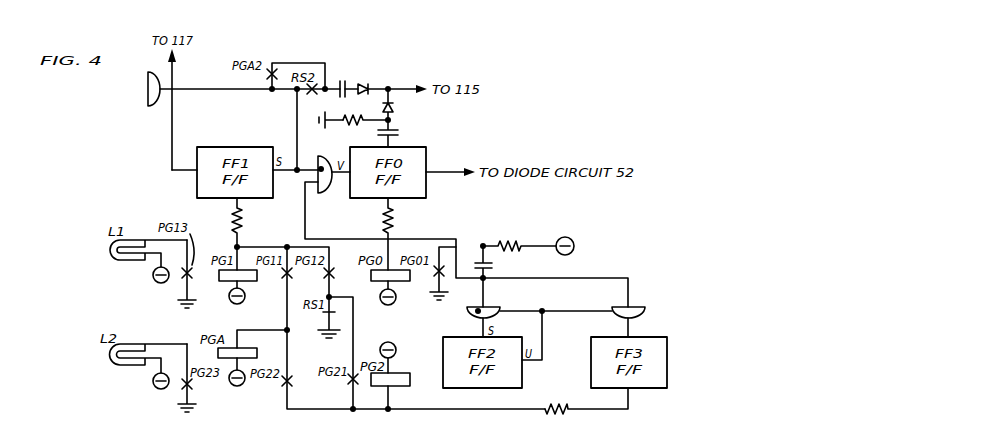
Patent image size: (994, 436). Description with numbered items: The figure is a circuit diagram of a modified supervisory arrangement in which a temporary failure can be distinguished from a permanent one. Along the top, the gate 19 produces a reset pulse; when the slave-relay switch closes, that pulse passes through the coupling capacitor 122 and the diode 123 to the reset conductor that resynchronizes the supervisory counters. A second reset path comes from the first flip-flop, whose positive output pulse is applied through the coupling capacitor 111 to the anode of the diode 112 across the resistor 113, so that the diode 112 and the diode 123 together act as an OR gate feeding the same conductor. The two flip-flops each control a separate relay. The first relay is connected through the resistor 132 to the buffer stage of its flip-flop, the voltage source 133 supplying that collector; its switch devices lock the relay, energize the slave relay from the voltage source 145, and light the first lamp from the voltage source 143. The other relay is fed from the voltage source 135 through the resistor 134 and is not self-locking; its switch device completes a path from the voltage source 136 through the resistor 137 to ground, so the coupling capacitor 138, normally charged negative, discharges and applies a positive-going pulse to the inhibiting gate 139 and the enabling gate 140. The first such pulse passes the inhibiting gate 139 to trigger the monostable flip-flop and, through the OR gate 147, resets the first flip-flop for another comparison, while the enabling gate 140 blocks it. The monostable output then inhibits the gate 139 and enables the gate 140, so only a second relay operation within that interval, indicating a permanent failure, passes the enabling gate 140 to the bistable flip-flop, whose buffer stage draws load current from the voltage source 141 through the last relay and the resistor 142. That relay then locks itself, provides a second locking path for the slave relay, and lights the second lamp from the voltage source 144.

The gate 19 is at (149, 81).
The coupling capacitor 122 is at (340, 78).
The diode 123 is at (360, 84).
The diode 112 is at (394, 106).
The resistor 113 is at (353, 114).
The coupling capacitor 111 is at (396, 133).
The OR gate 147 is at (326, 160).
The resistor 132 is at (250, 222).
The resistor 134 is at (401, 234).
The voltage source 133 is at (243, 301).
The voltage source 135 is at (387, 306).
The voltage source 141 is at (387, 343).
The voltage source 143 is at (157, 284).
The voltage source 144 is at (158, 391).
The voltage source 145 is at (238, 389).
The voltage source 136 is at (565, 238).
The resistor 137 is at (519, 237).
The coupling capacitor 138 is at (474, 267).
The inhibiting gate 139 is at (472, 311).
The enabling gate 140 is at (631, 309).
The resistor 142 is at (586, 401).